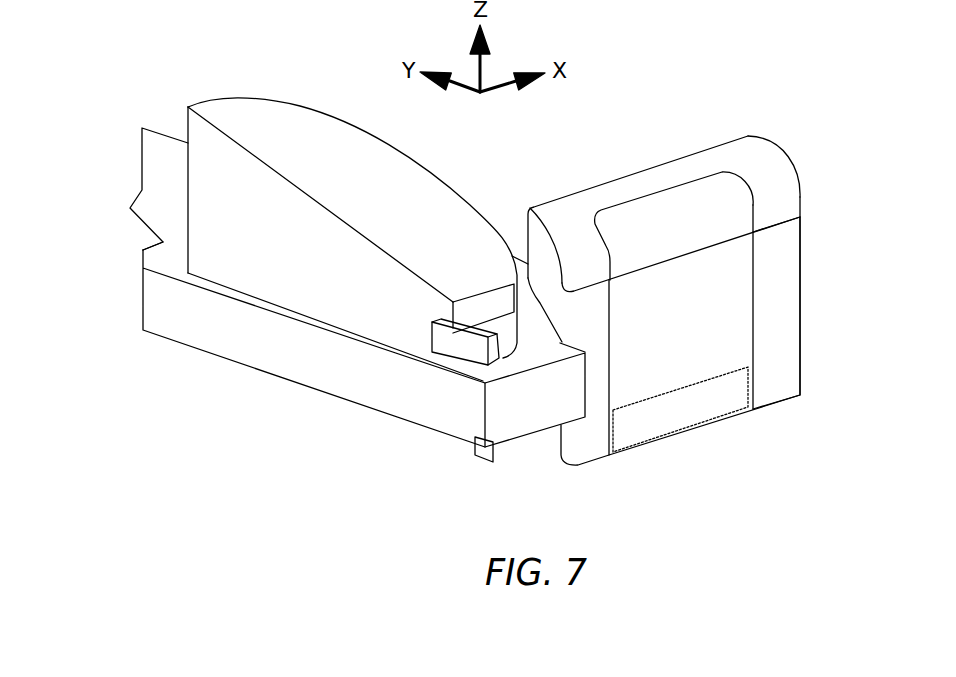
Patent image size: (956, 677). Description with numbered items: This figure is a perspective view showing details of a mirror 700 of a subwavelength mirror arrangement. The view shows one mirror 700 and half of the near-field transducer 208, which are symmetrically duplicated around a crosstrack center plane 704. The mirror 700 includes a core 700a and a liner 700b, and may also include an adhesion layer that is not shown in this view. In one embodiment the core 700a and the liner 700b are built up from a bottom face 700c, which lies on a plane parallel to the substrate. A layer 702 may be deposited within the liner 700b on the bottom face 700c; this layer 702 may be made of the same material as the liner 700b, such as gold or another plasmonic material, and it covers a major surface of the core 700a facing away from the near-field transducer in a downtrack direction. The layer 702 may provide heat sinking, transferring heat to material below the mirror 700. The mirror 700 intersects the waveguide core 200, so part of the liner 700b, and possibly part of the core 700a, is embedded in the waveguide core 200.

The waveguide core 200 is at (143, 292).
The near-field transducer (NFT) 208 is at (147, 82).
The mirror 700 is at (664, 277).
The core 700a is at (613, 226).
The liner 700b is at (728, 146).
The bottom face 700c is at (757, 410).
The layer 702 is at (686, 413).
The crosstrack center plane 704 is at (480, 457).